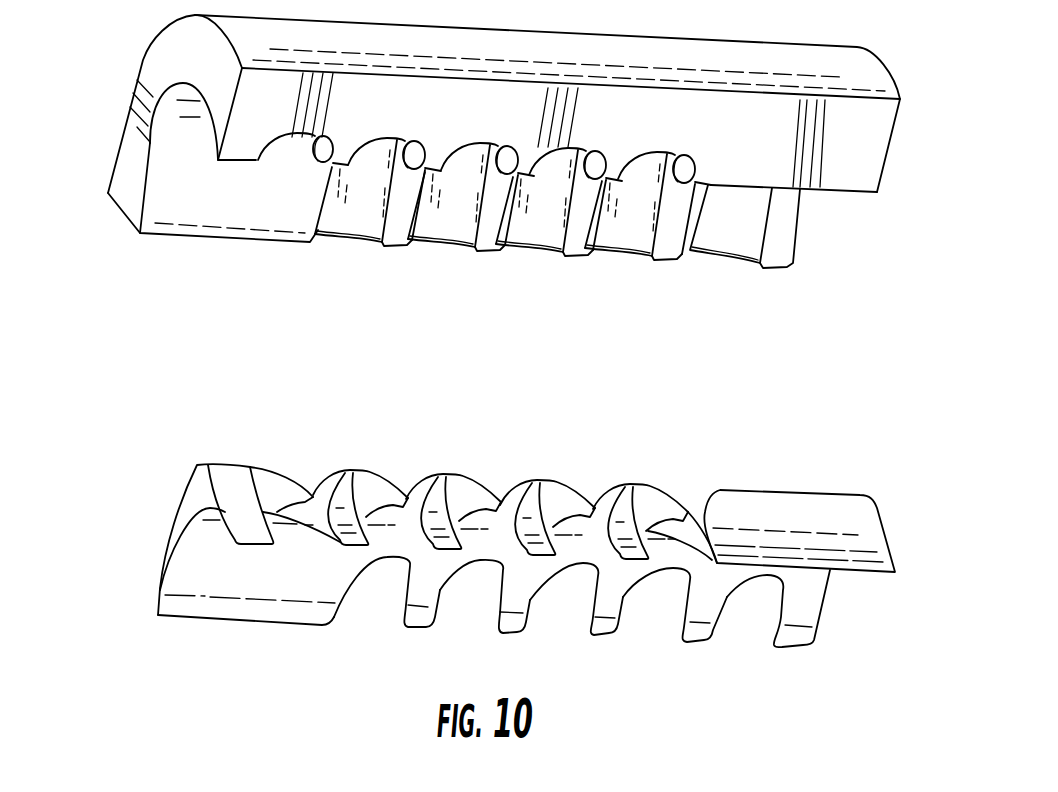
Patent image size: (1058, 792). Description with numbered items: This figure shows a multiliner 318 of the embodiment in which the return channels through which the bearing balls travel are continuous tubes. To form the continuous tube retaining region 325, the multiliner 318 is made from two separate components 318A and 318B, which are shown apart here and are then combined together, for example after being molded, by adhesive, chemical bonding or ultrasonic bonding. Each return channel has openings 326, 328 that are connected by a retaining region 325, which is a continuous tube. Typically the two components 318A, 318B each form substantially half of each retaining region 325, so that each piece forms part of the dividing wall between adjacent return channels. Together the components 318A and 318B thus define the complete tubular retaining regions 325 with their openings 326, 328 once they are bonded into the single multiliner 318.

The multiliner 318 is at (100, 5).
The separate component 318A is at (877, 137).
The separate component 318B is at (865, 538).
The retaining region 325 is at (675, 547).
The opening 326 is at (626, 433).
The opening 328 is at (617, 257).